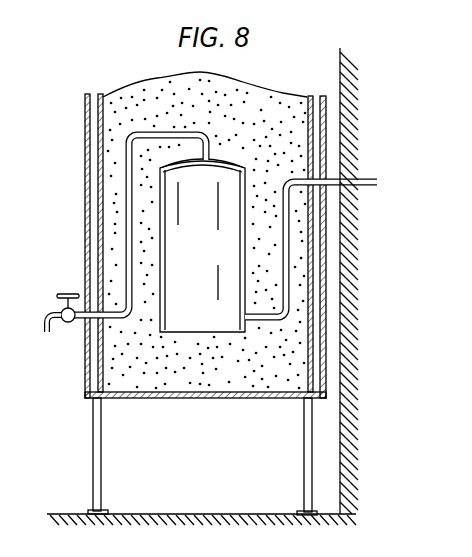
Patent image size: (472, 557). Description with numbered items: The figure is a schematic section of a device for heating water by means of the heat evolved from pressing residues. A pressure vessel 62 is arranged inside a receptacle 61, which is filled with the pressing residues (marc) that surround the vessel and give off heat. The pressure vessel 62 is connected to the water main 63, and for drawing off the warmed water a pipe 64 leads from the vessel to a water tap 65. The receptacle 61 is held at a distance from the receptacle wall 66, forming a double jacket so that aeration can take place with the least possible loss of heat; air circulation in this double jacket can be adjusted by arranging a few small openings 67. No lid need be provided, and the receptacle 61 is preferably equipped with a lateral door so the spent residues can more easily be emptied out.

The receptacle 61 is at (97, 200).
The pressure vessel 62 is at (216, 259).
The water main 63 is at (362, 179).
The pipe 64 is at (165, 133).
The water tap 65 is at (63, 311).
The receptacle wall 66 is at (88, 155).
The small openings 67 is at (91, 398).